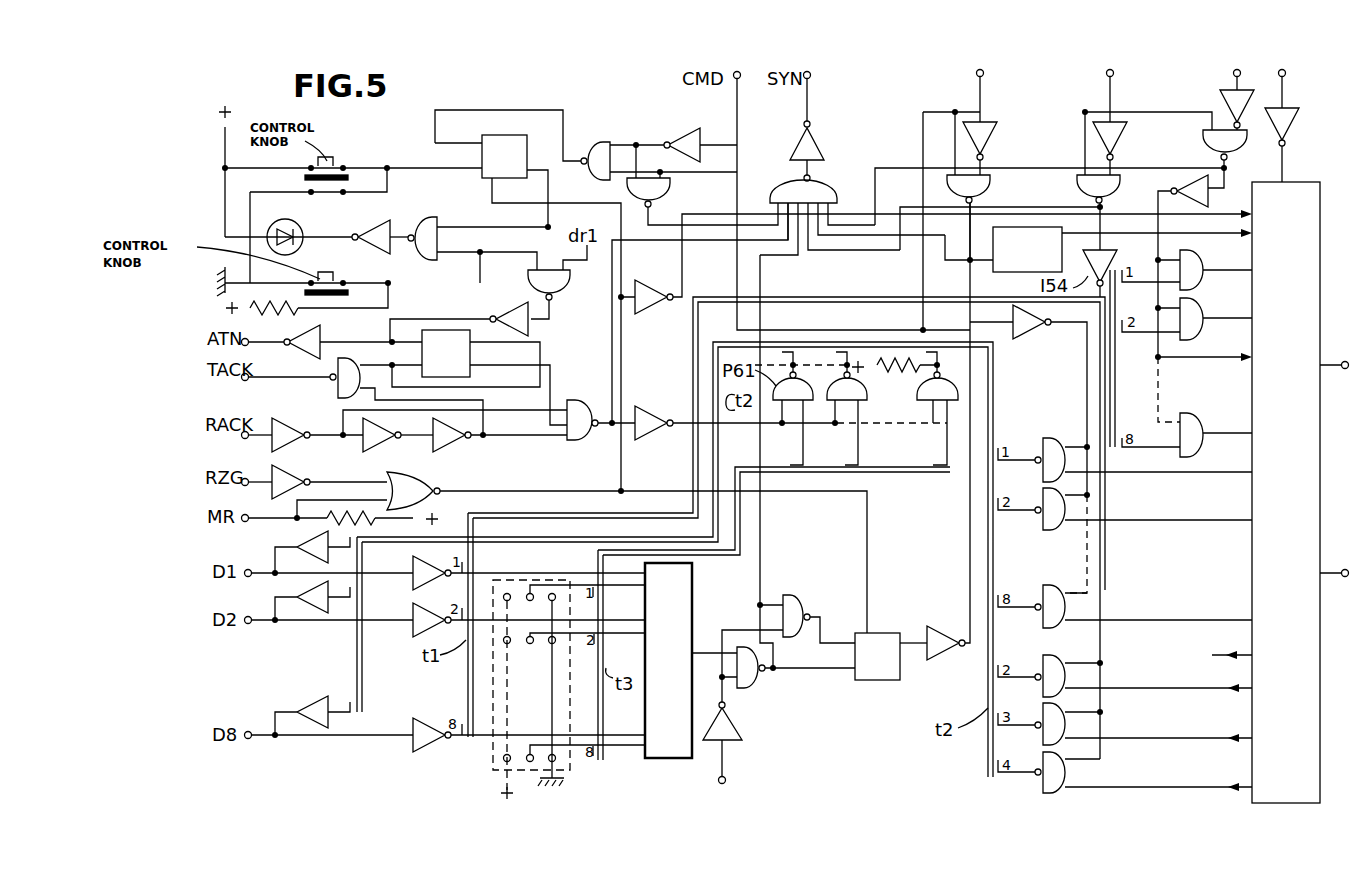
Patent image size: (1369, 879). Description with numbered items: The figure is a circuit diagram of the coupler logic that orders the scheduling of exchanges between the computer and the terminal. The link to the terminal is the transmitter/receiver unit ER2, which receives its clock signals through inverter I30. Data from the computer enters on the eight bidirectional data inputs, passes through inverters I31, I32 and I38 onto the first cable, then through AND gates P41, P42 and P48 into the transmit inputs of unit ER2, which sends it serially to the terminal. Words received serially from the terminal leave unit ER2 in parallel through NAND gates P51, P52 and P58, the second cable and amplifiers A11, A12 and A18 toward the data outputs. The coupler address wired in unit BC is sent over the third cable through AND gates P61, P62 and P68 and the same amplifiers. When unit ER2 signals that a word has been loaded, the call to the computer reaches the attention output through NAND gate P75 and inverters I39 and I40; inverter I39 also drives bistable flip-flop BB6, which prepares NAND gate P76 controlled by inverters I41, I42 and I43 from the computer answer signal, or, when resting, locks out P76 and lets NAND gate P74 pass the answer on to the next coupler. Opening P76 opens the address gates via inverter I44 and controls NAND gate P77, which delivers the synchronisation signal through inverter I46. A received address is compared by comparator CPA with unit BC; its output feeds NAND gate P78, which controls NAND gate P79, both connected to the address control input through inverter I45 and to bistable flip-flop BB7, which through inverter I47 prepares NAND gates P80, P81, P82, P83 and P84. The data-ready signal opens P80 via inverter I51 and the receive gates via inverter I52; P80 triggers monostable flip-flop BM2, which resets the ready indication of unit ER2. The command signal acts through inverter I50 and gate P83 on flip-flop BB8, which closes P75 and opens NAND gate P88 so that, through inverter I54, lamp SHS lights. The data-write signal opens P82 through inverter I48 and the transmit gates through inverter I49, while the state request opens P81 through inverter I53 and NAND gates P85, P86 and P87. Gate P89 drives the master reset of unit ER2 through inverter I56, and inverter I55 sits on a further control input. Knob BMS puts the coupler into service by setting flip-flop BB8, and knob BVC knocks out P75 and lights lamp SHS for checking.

The knob BMS is at (338, 160).
The knob BVC is at (338, 278).
The lamp SHS is at (298, 226).
The inverter I54 is at (372, 228).
The NAND gate P88 is at (418, 216).
The flip-flop BB8 is at (503, 98).
The NAND gate P75 is at (556, 300).
The inverter I39 is at (500, 315).
The inverter I40 is at (322, 340).
The bistable flip-flop BB6 is at (471, 376).
The NAND gate P74 is at (338, 370).
The inverter I41 is at (292, 432).
The inverter I42 is at (385, 450).
The inverter I43 is at (455, 450).
The NAND gate P76 is at (585, 441).
The inverter I44 is at (648, 405).
The inverter I56 is at (648, 315).
The inverter I55 is at (293, 478).
The gate P89 is at (433, 490).
The amplifier A11 is at (300, 545).
The amplifier A12 is at (298, 597).
The amplifier A18 is at (318, 703).
The inverter I31 is at (415, 582).
The inverter I32 is at (415, 632).
The inverter I38 is at (415, 750).
The wired unit BC is at (493, 760).
The comparator CPA is at (690, 605).
The NAND gate P78 is at (758, 688).
The inverter I45 is at (745, 722).
The NAND gate P79 is at (803, 601).
The bistable flip-flop BB7 is at (870, 681).
The inverter I47 is at (945, 627).
The NAND gate P83 is at (598, 145).
The inverter I50 is at (677, 128).
The NAND gate P84 is at (670, 193).
The inverter I46 is at (798, 135).
The NAND gate P77 is at (825, 185).
The inverter I51 is at (997, 132).
The NAND gate P80 is at (985, 190).
The inverter I53 is at (1124, 143).
The NAND gate P81 is at (1085, 196).
The NAND gate P82 is at (1200, 140).
The inverter I48 is at (1222, 100).
The inverter I49 is at (1173, 188).
The inverter I30 is at (1293, 140).
The monostable flip-flop BM2 is at (1036, 273).
The transmitter/receiver unit ER2 is at (1250, 580).
The AND gate P41 is at (1195, 262).
The AND gate P42 is at (1195, 309).
The AND gate P48 is at (1195, 420).
The inverter I52 is at (1030, 340).
The NAND gate P51 is at (1050, 438).
The NAND gate P52 is at (1050, 530).
The NAND gate P58 is at (1050, 585).
The NAND gate P85 is at (1050, 655).
The NAND gate P86 is at (1050, 703).
The NAND gate P87 is at (1050, 752).
The AND gate P61 is at (793, 408).
The AND gate P62 is at (866, 395).
The AND gate P68 is at (935, 415).